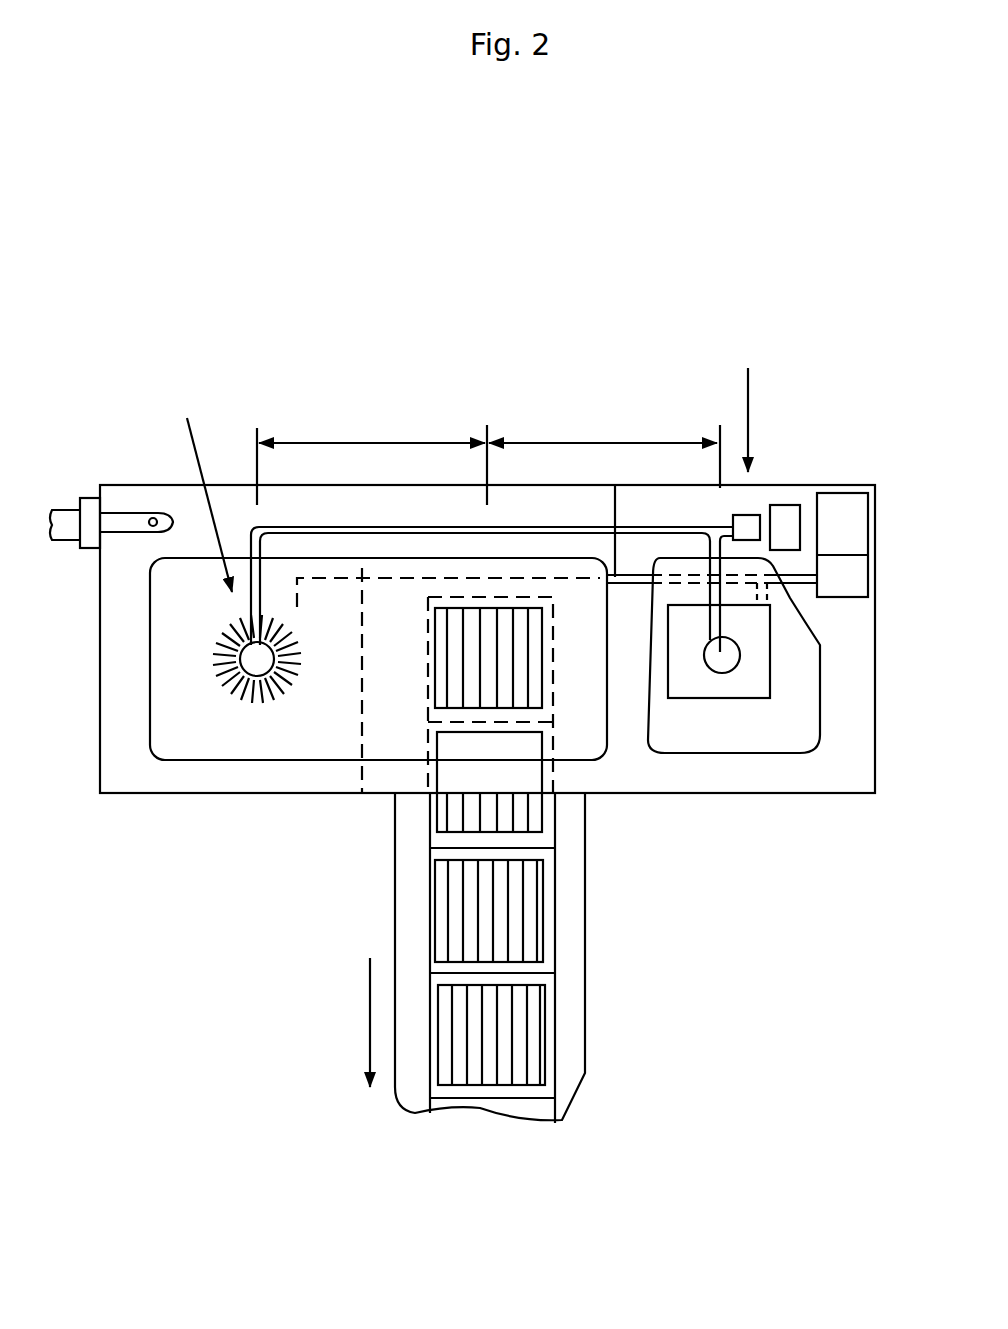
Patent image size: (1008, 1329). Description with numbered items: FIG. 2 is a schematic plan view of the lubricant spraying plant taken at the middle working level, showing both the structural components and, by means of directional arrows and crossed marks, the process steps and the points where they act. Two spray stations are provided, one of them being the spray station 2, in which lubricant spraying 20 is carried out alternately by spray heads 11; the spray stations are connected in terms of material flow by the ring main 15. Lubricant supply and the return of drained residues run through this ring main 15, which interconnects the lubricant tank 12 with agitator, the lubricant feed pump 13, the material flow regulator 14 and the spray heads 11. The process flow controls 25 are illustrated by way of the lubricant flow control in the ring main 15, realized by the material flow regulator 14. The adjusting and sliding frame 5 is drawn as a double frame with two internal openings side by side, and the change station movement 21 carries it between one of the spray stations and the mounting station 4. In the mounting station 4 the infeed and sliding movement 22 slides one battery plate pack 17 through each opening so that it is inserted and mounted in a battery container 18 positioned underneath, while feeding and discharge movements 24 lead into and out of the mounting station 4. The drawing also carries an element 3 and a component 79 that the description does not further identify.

The spray station 2 is at (315, 775).
The grating 3 is at (677, 772).
The mounting station 4 is at (403, 772).
The adjusting and sliding frame 5 is at (698, 595).
The spray heads 11 is at (257, 659).
The lubricant tank 12 is at (843, 515).
The lubricant feed pump 13 is at (788, 525).
The material flow regulator 14 is at (748, 532).
The ring main 15 is at (660, 507).
The battery plate pack 17 is at (483, 662).
The battery container 18 is at (552, 943).
The lubricant spraying 20 is at (217, 477).
The change station movement 21 is at (518, 462).
The infeed and sliding movement 22 is at (570, 383).
The feeding and discharge movements 24 is at (385, 1015).
The process flow controls 25 is at (728, 398).
The hinge 79 is at (118, 523).